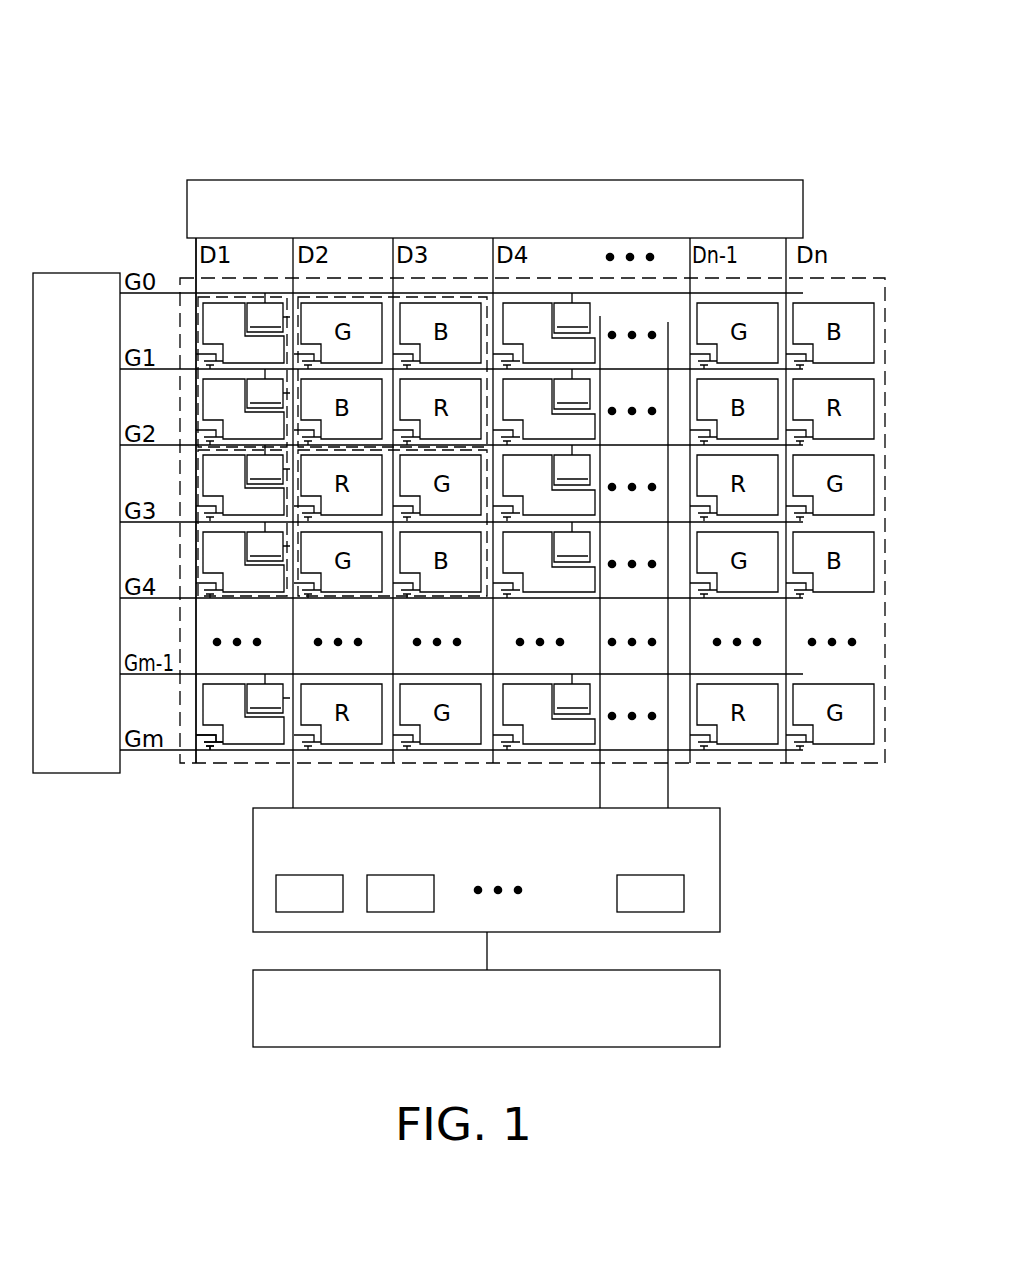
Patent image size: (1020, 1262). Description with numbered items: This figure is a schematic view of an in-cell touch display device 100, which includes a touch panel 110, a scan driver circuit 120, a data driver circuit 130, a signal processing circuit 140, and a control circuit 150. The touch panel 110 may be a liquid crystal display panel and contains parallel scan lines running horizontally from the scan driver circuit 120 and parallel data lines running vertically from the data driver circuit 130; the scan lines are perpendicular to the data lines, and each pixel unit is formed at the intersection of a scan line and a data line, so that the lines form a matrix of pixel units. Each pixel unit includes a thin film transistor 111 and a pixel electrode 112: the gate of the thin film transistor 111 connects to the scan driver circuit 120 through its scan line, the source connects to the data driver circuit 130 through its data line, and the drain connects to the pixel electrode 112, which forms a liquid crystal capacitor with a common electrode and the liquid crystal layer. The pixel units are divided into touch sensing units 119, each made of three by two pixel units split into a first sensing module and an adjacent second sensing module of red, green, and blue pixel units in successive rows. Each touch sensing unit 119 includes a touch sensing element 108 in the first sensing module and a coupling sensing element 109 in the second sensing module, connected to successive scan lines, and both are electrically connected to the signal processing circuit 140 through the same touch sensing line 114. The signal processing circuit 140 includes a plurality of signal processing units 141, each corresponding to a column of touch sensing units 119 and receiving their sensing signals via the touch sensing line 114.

The touch display device 100 is at (536, 78).
The data driver circuit 130 is at (747, 180).
The scan driver circuit 120 is at (98, 773).
The touch panel 110 is at (785, 763).
The touch sensing unit 119 is at (217, 297).
The touch sensing element 108 is at (600, 469).
The coupling sensing element 109 is at (600, 698).
The thin film transistor 111 is at (203, 758).
The pixel electrode 112 is at (247, 742).
The touch sensing line 114 is at (293, 790).
The signal processing circuit 140 is at (720, 846).
The signal processing unit 141 is at (672, 893).
The control circuit 150 is at (720, 1005).